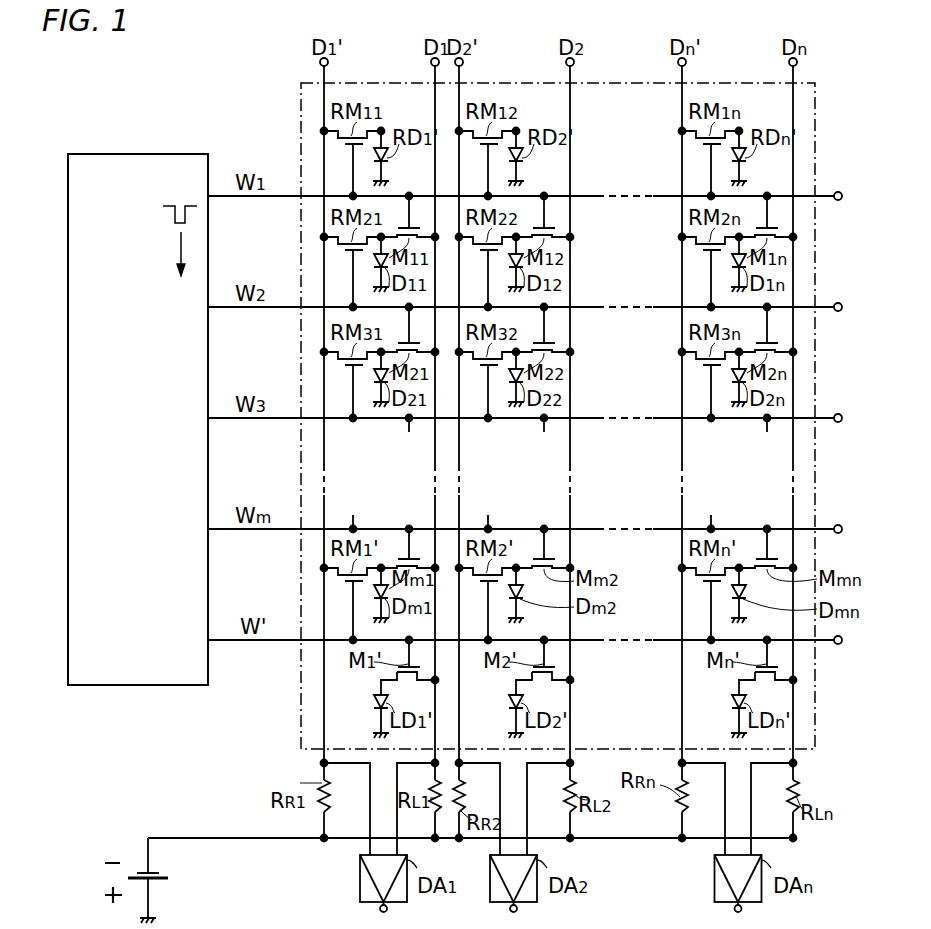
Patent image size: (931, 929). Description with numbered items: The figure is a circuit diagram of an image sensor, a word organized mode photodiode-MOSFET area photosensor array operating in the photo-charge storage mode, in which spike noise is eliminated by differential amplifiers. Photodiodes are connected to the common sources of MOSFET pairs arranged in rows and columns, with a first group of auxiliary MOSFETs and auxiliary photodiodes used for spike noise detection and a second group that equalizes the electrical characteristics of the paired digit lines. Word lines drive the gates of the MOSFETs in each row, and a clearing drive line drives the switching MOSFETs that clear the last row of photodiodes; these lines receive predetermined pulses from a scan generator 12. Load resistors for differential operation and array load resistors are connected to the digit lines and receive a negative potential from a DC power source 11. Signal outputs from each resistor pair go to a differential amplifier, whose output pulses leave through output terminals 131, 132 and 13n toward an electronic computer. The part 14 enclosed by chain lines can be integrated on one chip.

The DC power source 11 is at (160, 880).
The scan generator 12 is at (145, 154).
The part enclosed by chain lines 14 is at (815, 88).
The output terminal 131 is at (387, 909).
The output terminal 132 is at (517, 909).
The output terminal 13n is at (742, 909).